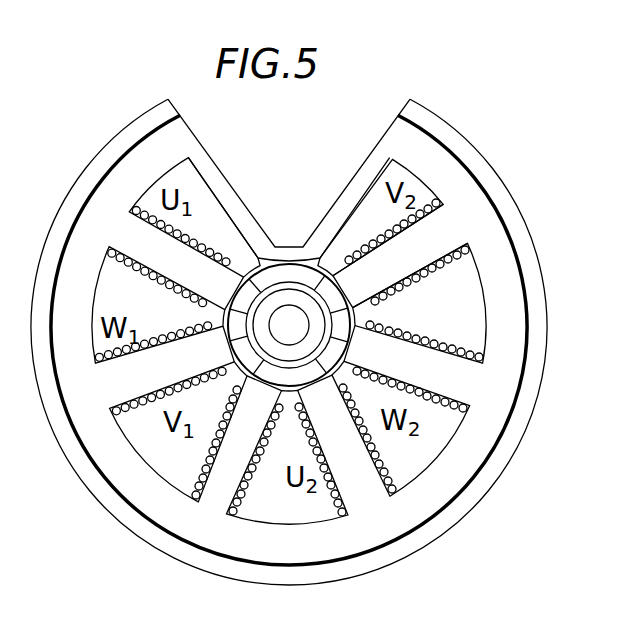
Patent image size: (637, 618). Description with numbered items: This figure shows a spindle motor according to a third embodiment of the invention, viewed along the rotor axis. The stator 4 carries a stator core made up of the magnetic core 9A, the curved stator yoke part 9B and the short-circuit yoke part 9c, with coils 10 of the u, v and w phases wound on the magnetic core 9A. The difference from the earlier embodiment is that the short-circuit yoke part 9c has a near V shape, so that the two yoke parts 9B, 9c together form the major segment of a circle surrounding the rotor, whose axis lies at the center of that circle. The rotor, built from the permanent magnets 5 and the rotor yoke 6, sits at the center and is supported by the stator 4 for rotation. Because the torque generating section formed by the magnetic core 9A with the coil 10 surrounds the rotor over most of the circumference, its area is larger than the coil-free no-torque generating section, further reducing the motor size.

The stator 4 is at (520, 203).
The permanent magnets 5 is at (283, 277).
The rotor yoke 6 is at (250, 290).
The magnetic core 9A is at (425, 245).
The curved stator yoke part 9B is at (455, 175).
The short-circuit yoke part 9c is at (217, 178).
The coils 10 is at (465, 352).